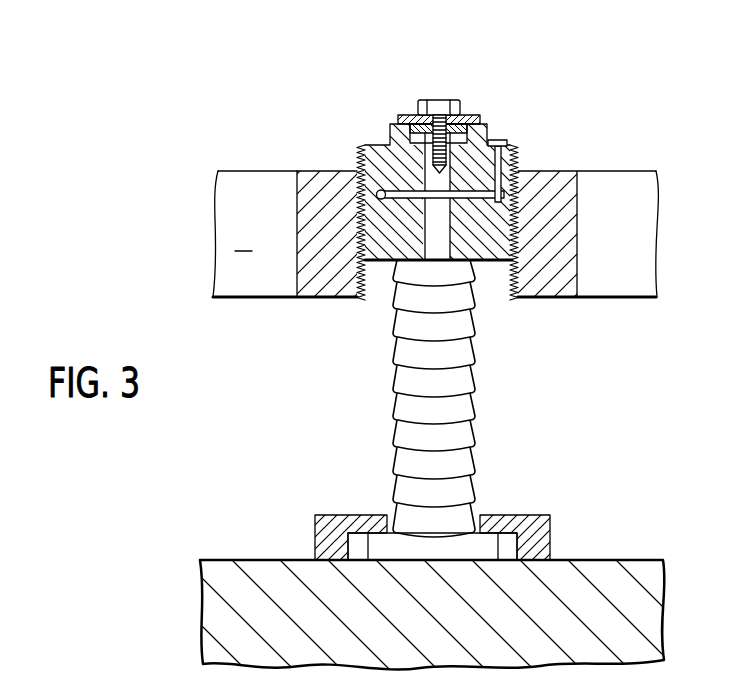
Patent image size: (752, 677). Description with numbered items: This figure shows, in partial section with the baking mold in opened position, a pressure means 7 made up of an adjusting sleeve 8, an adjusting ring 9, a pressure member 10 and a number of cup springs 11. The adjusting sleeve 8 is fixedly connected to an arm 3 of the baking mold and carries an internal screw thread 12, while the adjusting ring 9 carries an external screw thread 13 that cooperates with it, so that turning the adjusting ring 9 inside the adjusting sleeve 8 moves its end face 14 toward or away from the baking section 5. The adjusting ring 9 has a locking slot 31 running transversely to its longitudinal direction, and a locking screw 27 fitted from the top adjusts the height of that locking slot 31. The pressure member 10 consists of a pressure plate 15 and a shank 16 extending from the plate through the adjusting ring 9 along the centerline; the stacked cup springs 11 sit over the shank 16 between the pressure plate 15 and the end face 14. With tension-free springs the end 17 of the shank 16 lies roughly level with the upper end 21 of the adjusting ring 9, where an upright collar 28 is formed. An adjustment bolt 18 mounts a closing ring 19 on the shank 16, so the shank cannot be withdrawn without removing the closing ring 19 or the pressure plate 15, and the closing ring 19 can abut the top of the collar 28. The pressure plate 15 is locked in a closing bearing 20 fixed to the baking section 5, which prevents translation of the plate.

The arm 3 is at (255, 234).
The baking section 5 is at (588, 572).
The pressure means 7 is at (252, 426).
The adjusting sleeve 8 is at (557, 243).
The adjusting ring 9 is at (530, 217).
The pressure member 10 is at (444, 398).
The cup springs 11 is at (408, 470).
The internal screw thread 12 is at (517, 301).
The external screw thread 13 is at (468, 187).
The end face 14 is at (363, 299).
The pressure plate 15 is at (476, 548).
The shank 16 is at (437, 233).
The end of the shank 17 is at (466, 86).
The adjustment bolt 18 is at (462, 101).
The closing ring 19 is at (481, 124).
The closing bearing 20 is at (318, 527).
The upper end 21 is at (372, 132).
The locking screw 27 is at (512, 142).
The upright collar 28 is at (497, 140).
The locking slot 31 is at (508, 190).